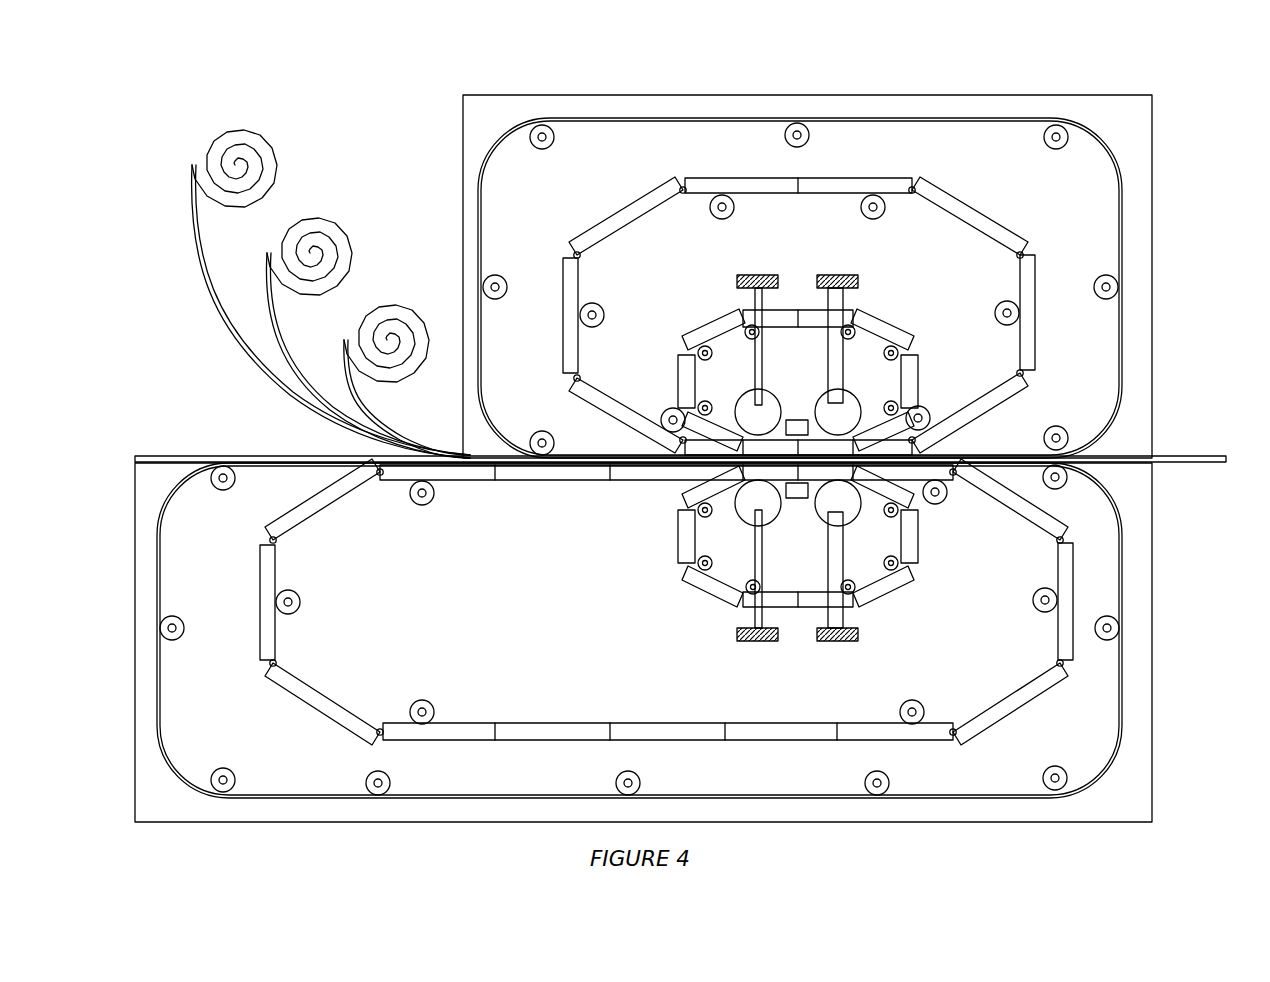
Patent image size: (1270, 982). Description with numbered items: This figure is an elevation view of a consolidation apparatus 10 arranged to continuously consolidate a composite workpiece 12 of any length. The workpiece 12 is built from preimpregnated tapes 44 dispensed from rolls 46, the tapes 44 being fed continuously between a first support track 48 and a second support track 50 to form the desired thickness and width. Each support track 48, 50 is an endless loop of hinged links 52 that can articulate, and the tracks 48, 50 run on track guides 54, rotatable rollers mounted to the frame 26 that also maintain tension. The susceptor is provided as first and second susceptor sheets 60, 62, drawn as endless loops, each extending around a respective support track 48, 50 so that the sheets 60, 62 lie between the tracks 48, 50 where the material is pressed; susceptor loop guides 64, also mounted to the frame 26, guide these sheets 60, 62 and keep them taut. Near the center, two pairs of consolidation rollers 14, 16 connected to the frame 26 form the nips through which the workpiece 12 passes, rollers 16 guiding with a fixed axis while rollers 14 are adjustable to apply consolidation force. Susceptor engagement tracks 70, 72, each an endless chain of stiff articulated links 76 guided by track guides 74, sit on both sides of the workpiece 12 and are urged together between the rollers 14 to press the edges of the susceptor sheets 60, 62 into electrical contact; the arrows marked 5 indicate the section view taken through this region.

The consolidation apparatus 10 is at (1192, 107).
The composite workpiece 12 is at (1118, 455).
The consolidation rollers 14 is at (850, 390).
The consolidation rollers 16 is at (775, 400).
The frame 26 is at (1140, 152).
The preimpregnated tapes 44 is at (197, 290).
The rolls 46 is at (300, 125).
The first support track 48 is at (1080, 580).
The second support track 50 is at (1047, 247).
The links 52 is at (765, 178).
The track guides 54 is at (1004, 300).
The first susceptor sheet 60 is at (1085, 793).
The second susceptor sheet 62 is at (1122, 345).
The susceptor loop guides 64 is at (785, 135).
The susceptor engagement track 70 is at (698, 590).
The susceptor engagement track 72 is at (662, 320).
The track guides 74 is at (700, 405).
The articulated links 76 is at (750, 310).
The section view indicator 5 is at (797, 420).